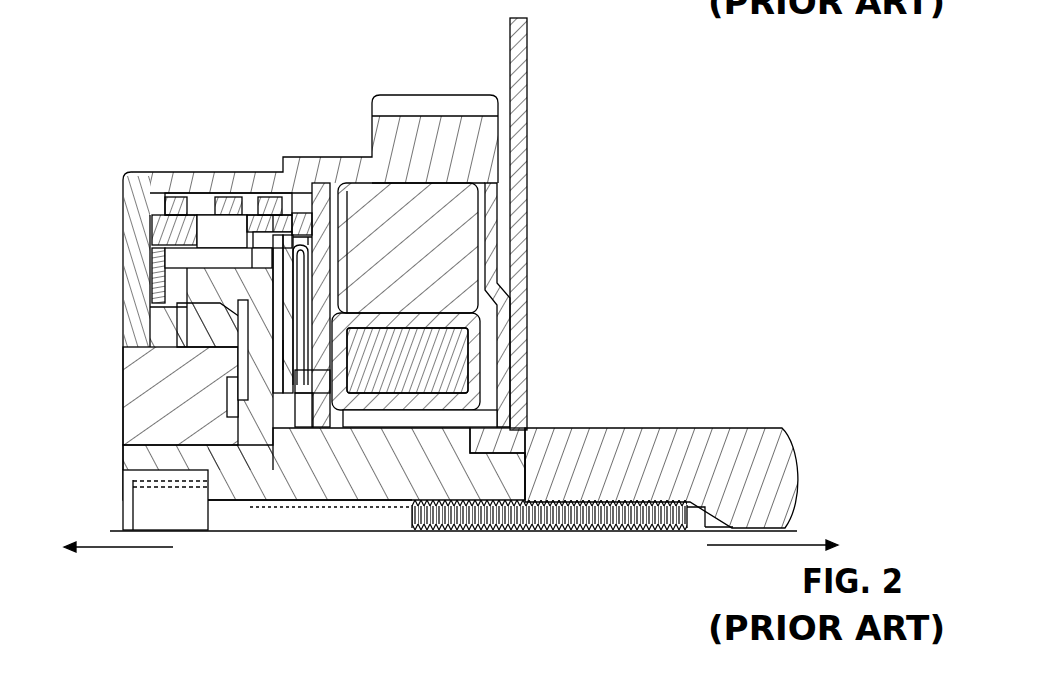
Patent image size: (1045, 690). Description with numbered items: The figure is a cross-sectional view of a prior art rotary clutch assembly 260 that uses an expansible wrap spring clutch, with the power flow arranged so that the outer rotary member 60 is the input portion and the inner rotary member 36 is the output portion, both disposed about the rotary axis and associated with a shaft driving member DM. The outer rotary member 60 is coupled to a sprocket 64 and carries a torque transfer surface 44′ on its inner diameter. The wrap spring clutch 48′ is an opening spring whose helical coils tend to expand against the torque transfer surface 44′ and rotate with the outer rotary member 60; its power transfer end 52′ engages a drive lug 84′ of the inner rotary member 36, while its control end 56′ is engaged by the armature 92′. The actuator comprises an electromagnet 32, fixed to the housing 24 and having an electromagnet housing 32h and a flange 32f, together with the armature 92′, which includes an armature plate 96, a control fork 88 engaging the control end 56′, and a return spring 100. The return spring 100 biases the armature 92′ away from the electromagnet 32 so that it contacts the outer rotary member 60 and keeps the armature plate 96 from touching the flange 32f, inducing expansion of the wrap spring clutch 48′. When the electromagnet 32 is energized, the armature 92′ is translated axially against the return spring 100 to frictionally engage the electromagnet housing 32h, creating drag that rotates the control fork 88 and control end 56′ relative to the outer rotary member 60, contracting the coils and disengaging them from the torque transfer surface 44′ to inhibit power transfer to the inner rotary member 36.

The prior art clutch assembly 260 is at (168, 40).
The housing 24 is at (510, 68).
The outer rotary member 60 is at (142, 172).
The wrap spring clutch 48′ is at (183, 172).
The control end 56′ is at (267, 172).
The sprocket 64 is at (408, 94).
The control fork 88 is at (298, 222).
The armature plate 96 is at (325, 262).
The torque transfer surface 44′ is at (196, 199).
The drive lug 84′ is at (163, 245).
The power transfer end 52′ is at (172, 262).
The return spring 100 is at (278, 356).
The armature 92′ is at (293, 333).
The electromagnet housing 32h is at (428, 318).
The electromagnet 32 is at (455, 372).
The inner rotary member 36 is at (526, 468).
The driving member DM is at (661, 445).
The flange 32f is at (340, 413).